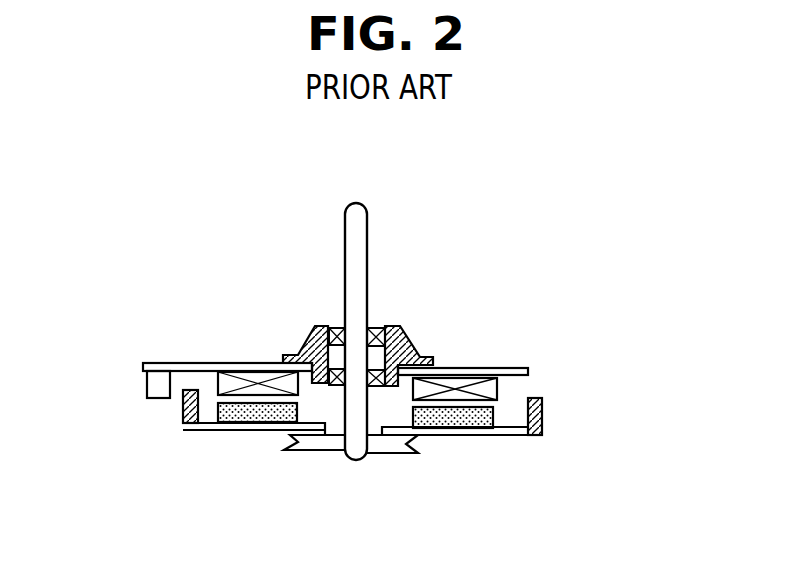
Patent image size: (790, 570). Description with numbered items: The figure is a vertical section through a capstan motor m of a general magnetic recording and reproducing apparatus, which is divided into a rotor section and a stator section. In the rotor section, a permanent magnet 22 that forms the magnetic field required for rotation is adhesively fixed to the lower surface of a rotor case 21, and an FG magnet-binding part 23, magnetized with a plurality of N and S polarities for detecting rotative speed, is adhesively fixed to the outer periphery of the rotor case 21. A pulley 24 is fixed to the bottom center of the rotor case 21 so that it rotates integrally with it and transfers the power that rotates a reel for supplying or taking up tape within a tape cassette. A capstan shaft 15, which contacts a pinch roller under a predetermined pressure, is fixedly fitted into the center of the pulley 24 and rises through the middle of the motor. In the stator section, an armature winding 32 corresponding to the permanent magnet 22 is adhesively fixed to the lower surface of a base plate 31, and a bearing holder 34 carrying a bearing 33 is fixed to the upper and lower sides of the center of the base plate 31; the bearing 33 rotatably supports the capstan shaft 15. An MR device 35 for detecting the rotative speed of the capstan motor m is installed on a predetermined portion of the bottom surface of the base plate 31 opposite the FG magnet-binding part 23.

The capstan shaft 15 is at (353, 458).
The rotor case 21 is at (502, 438).
The permanent magnet 22 is at (225, 422).
The FG magnet-binding part 23 is at (185, 422).
The pulley 24 is at (390, 454).
The base plate 31 is at (180, 362).
The armature winding 32 is at (252, 372).
The bearing 33 is at (338, 330).
The bearing holder 34 is at (410, 332).
The MR device 35 is at (153, 386).
The capstan motor m is at (478, 367).